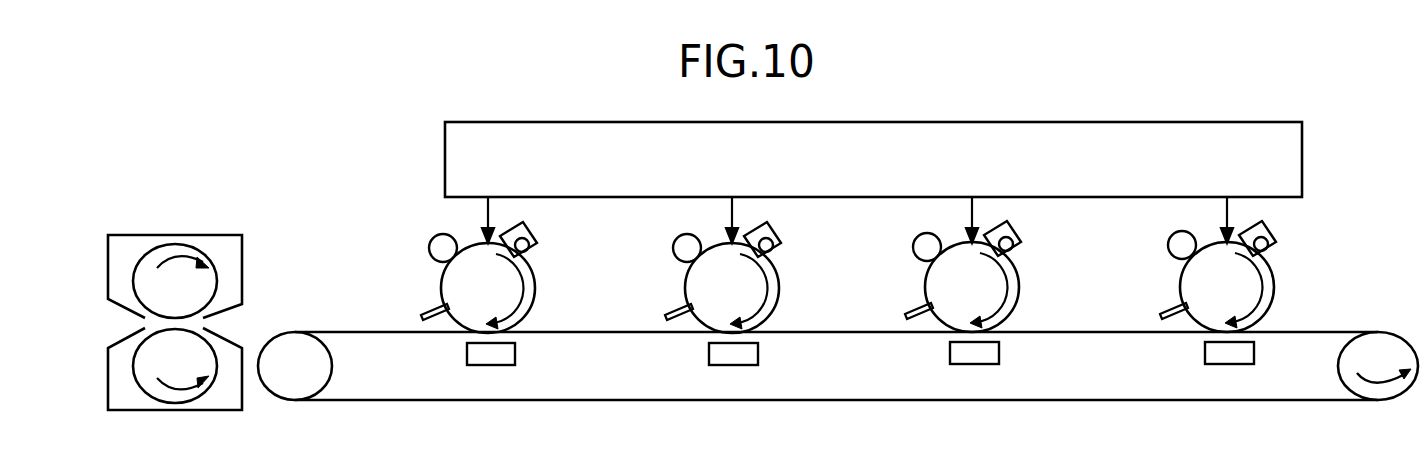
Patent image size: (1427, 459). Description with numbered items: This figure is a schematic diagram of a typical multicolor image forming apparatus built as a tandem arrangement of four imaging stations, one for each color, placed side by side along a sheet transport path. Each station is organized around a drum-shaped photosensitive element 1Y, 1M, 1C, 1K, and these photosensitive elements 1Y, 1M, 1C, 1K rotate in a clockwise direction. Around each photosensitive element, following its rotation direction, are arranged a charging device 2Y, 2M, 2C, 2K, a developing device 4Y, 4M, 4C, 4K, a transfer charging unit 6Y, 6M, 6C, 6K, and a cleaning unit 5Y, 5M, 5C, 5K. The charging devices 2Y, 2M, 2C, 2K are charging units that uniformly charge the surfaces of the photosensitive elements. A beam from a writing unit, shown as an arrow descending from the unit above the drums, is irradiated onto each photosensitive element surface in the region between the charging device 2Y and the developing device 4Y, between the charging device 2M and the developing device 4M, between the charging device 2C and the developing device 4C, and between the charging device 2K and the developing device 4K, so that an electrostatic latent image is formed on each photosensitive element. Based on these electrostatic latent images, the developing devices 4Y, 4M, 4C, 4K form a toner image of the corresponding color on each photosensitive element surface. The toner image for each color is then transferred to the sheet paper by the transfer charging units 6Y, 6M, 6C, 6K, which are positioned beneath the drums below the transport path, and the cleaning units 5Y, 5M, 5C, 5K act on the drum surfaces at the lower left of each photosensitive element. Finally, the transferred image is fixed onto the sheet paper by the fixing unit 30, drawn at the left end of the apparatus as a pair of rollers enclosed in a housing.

The fixing unit 30 is at (168, 235).
The photosensitive element 1K is at (488, 288).
The charging device 2K is at (443, 236).
The developing device 4K is at (537, 240).
The cleaning unit 5K is at (426, 308).
The transfer charging unit 6K is at (503, 365).
The photosensitive element 1C is at (732, 288).
The charging device 2C is at (687, 236).
The developing device 4C is at (781, 240).
The cleaning unit 5C is at (667, 307).
The transfer charging unit 6C is at (747, 365).
The photosensitive element 1M is at (972, 287).
The charging device 2M is at (927, 235).
The developing device 4M is at (1021, 239).
The cleaning unit 5M is at (912, 308).
The transfer charging unit 6M is at (987, 364).
The photosensitive element 1Y is at (1227, 287).
The charging device 2Y is at (1182, 233).
The developing device 4Y is at (1276, 239).
The cleaning unit 5Y is at (1170, 304).
The transfer charging unit 6Y is at (1243, 364).